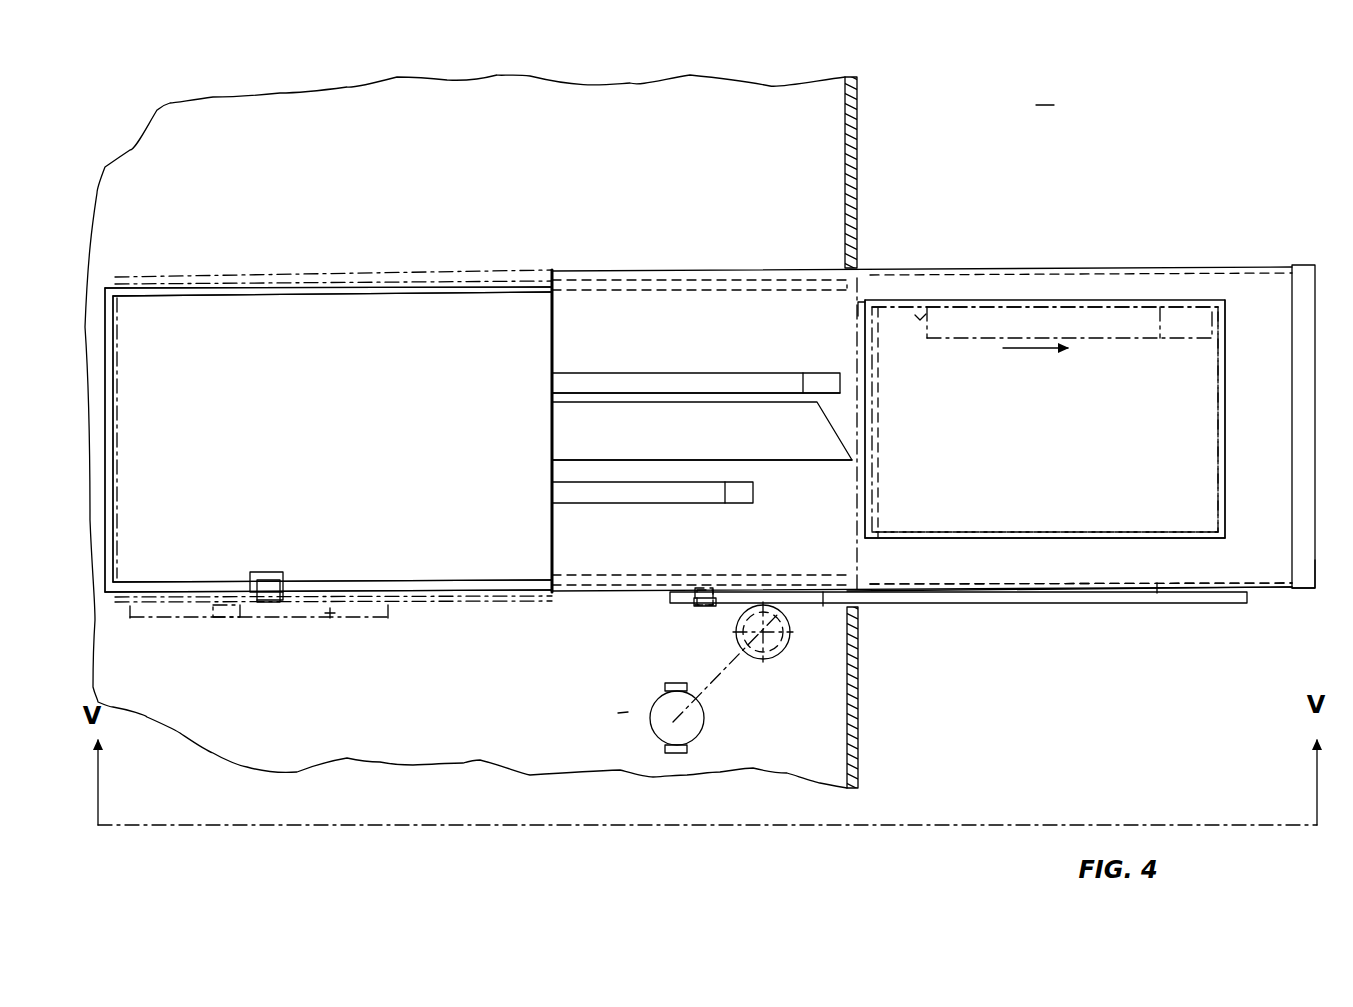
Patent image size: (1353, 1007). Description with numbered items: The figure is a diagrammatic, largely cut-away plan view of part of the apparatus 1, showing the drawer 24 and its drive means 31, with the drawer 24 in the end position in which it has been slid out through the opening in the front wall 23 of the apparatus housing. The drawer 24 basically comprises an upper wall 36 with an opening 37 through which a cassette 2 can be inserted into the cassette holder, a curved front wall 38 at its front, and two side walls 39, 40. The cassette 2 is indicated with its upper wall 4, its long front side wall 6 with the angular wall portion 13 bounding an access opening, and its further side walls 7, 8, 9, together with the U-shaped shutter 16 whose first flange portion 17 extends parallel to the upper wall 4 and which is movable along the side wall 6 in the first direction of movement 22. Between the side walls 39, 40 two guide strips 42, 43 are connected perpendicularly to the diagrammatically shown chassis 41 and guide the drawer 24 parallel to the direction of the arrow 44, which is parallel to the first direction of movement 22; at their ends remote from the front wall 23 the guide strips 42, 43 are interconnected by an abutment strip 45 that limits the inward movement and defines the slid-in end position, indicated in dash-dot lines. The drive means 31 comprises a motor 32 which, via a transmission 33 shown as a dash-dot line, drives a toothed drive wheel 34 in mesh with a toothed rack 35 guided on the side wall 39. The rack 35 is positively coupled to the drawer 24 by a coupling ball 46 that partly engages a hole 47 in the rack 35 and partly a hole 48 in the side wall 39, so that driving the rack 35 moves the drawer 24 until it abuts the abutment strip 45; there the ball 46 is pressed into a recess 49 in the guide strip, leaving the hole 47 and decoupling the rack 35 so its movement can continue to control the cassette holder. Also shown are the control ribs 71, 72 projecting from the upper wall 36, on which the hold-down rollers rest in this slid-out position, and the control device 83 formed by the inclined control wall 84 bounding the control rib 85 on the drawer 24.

The apparatus 1 is at (942, 165).
The cassette 2 is at (1228, 399).
The upper wall 4 is at (1207, 447).
The side wall 6 is at (890, 305).
The side wall 7 is at (864, 352).
The side wall 8 is at (1103, 537).
The side wall 9 is at (1222, 346).
The angular wall portion 13 is at (922, 318).
The shutter 16 is at (1094, 342).
The first flange portion 17 is at (1042, 316).
The first direction of movement 22 is at (1040, 349).
The front wall 23 is at (853, 187).
The drawer 24 is at (1273, 262).
The drive means 31 is at (628, 712).
The motor 32 is at (698, 731).
The transmission 33 is at (722, 680).
The toothed drive wheel 34 is at (778, 658).
The toothed rack 35 is at (336, 614).
The upper wall 36 is at (930, 566).
The opening 37 is at (1027, 530).
The front wall 38 is at (1309, 569).
The side wall 39 is at (1157, 604).
The side wall 40 is at (1153, 268).
The chassis 41 is at (191, 112).
The guide strip 42 is at (432, 590).
The guide strip 43 is at (297, 290).
The arrow 44 is at (376, 436).
The abutment strip 45 is at (103, 305).
The coupling ball 46 is at (259, 606).
The hole 47 is at (233, 610).
The hole 48 is at (282, 598).
The recess 49 is at (272, 574).
The control rib 71 is at (628, 386).
The control rib 72 is at (662, 497).
The control device 83 is at (832, 403).
The control wall 84 is at (736, 396).
The control rib 85 is at (785, 442).